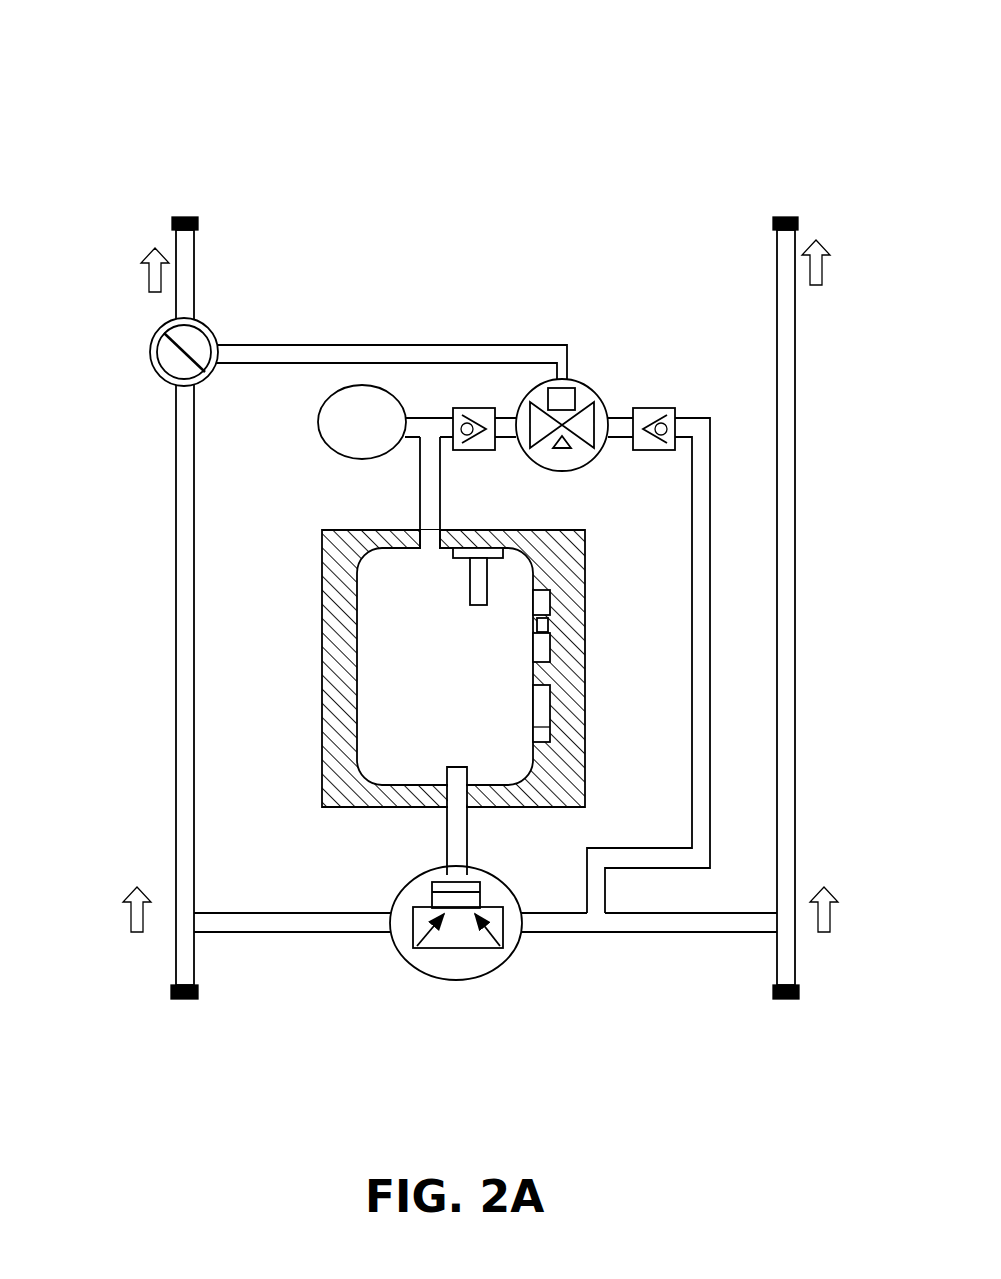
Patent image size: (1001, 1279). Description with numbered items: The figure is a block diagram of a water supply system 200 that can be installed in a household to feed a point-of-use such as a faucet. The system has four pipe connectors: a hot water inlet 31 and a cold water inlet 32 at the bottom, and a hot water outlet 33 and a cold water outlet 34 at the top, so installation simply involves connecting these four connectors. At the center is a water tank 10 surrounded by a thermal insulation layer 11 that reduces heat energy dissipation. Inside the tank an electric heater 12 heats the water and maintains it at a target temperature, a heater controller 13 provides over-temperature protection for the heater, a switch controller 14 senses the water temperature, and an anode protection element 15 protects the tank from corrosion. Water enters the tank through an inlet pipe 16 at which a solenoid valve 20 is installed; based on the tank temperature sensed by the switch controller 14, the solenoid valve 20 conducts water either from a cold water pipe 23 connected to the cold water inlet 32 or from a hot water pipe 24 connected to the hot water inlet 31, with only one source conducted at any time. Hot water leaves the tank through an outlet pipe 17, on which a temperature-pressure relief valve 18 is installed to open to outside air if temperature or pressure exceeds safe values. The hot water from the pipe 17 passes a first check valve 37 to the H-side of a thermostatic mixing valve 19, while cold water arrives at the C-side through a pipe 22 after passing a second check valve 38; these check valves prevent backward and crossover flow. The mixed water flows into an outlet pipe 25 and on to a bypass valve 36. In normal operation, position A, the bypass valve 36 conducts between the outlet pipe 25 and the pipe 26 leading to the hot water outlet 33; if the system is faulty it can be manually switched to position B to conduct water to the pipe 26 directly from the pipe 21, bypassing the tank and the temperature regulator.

The water supply system 200 is at (108, 55).
The water tank 10 is at (388, 752).
The thermal insulation layer 11 is at (322, 700).
The electric heater 12 is at (585, 745).
The heater controller 13 is at (585, 641).
The switch controller 14 is at (585, 597).
The anode protection element 15 is at (463, 575).
The inlet pipe 16 is at (453, 767).
The outlet pipe 17 is at (438, 472).
The temperature-pressure relief valve 18 is at (363, 385).
The thermostatic mixing valve 19 is at (576, 380).
The solenoid valve 20 is at (437, 958).
The pipe 21 is at (176, 745).
The pipe 22 is at (700, 545).
The cold water pipe 23 is at (795, 886).
The hot water pipe 24 is at (176, 925).
The outlet pipe 25 is at (436, 345).
The pipe 26 is at (172, 290).
The hot water inlet 31 is at (173, 1000).
The cold water inlet 32 is at (797, 1000).
The hot water outlet 33 is at (173, 217).
The cold water outlet 34 is at (785, 217).
The bypass valve 36 is at (174, 387).
The first check valve 37 is at (472, 408).
The second check valve 38 is at (656, 408).